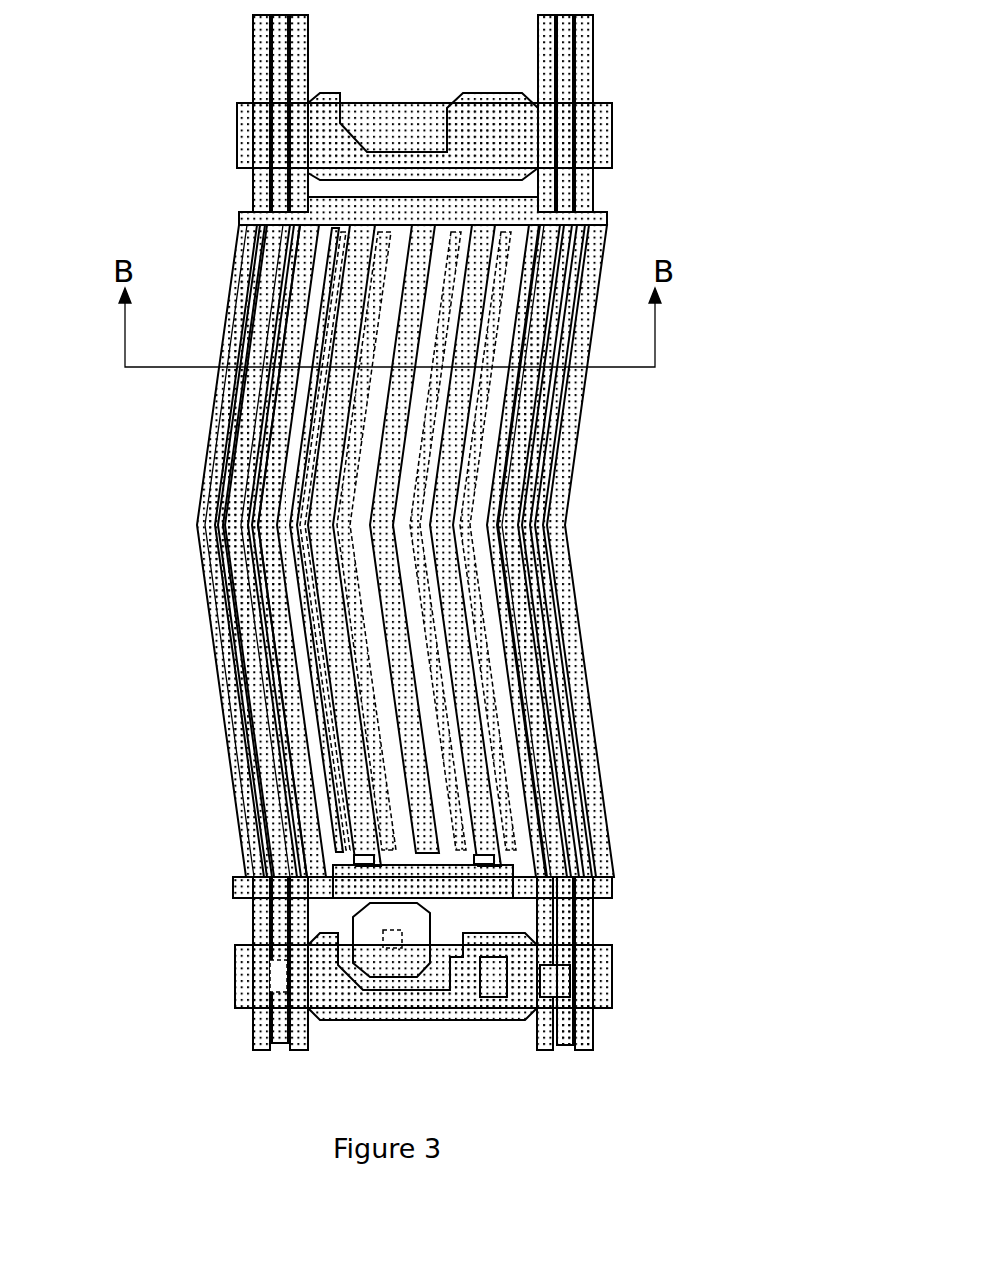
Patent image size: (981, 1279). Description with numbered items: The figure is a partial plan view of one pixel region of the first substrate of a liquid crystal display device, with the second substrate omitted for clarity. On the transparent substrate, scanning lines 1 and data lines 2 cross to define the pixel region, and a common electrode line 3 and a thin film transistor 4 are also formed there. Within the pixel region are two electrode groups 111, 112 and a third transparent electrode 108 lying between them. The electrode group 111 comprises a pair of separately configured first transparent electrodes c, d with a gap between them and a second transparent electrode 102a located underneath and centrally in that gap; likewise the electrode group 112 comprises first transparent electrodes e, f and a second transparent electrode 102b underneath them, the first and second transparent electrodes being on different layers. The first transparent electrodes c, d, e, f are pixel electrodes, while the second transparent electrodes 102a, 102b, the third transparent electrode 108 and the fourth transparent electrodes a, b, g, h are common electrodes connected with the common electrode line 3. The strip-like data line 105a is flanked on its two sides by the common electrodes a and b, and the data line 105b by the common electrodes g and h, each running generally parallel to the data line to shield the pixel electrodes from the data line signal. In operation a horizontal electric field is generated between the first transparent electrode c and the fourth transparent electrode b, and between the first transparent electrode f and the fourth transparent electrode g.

The scanning line 1 is at (597, 967).
The data line 2 is at (557, 1018).
The common electrode line 3 is at (603, 862).
The thin film transistor 4 is at (480, 992).
The data line 105a is at (262, 745).
The data line 105b is at (543, 697).
The second transparent electrode 102a is at (320, 515).
The second transparent electrode 102b is at (445, 478).
The third transparent electrode 108 is at (420, 772).
The electrode group 111 is at (95, 420).
The electrode group 112 is at (675, 403).
The fourth transparent electrode a is at (202, 560).
The fourth transparent electrode b is at (260, 640).
The first transparent electrode c is at (297, 542).
The first transparent electrode d is at (345, 468).
The first transparent electrode e is at (425, 443).
The first transparent electrode f is at (453, 533).
The fourth transparent electrode g is at (507, 633).
The fourth transparent electrode h is at (563, 562).